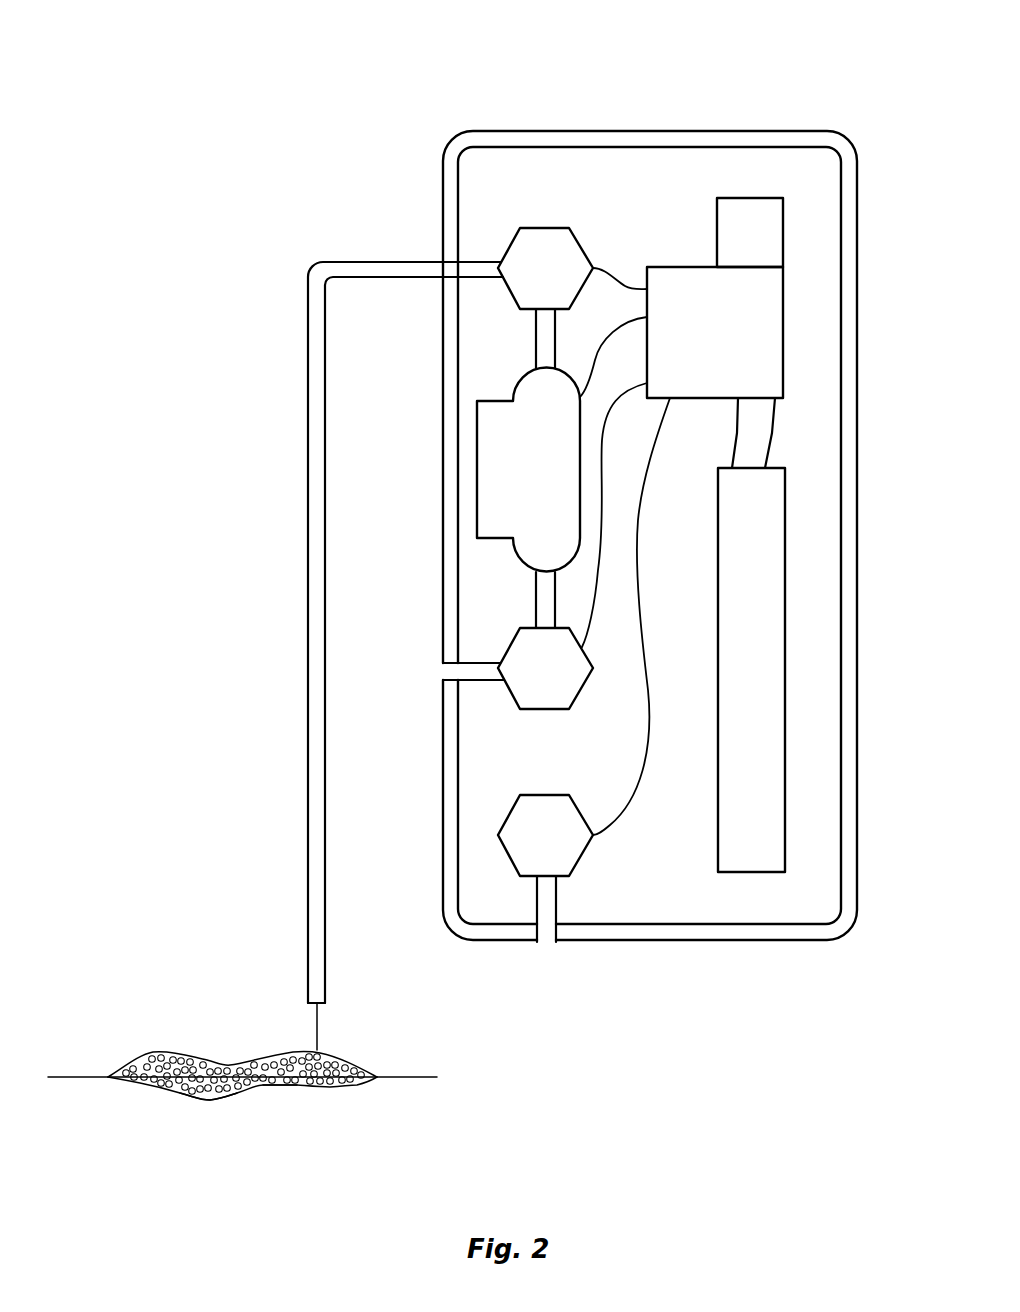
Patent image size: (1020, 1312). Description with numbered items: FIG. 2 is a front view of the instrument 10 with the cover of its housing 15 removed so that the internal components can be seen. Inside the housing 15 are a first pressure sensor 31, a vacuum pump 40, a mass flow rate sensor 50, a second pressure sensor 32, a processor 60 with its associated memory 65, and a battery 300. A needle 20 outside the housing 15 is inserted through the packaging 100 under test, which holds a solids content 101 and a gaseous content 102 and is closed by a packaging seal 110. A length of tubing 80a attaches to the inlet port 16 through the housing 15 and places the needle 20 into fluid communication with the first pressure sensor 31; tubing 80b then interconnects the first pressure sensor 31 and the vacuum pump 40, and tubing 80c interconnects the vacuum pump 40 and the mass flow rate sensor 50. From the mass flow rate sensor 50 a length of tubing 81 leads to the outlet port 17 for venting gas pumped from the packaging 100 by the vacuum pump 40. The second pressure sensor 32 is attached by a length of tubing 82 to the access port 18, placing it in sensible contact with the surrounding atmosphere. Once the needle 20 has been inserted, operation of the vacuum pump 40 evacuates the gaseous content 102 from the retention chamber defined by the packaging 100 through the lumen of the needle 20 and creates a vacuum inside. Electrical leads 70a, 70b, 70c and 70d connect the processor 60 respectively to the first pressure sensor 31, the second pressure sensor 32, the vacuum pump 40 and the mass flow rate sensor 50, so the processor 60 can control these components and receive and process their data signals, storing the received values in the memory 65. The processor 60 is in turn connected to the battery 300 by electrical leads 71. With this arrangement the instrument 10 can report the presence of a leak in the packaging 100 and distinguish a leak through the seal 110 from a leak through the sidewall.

The instrument 10 is at (382, 57).
The housing 15 is at (725, 158).
The inlet port through the housing 16 is at (450, 268).
The outlet port through the housing 17 is at (448, 672).
The access port through the housing 18 is at (546, 943).
The needle 20 is at (320, 1021).
The first pressure sensor 31 is at (561, 283).
The second pressure sensor 32 is at (561, 850).
The vacuum pump 40 is at (553, 482).
The mass flow rate sensor 50 is at (561, 683).
The processor 60 is at (730, 348).
The memory 65 is at (763, 247).
The lead from the first pressure sensor to the processor 70a is at (606, 268).
The lead from the second pressure sensor to the processor 70b is at (605, 357).
The lead from the vacuum pump to the processor 70c is at (593, 626).
The lead from the mass flow rate sensor to the processor 70d is at (638, 546).
The leads from the processor to the battery 71 is at (771, 430).
The length of tubing interconnecting the needle and the first pressure sensor 80a is at (308, 686).
The length of tubing interconnecting the first pressure sensor and the vacuum pump 80b is at (536, 330).
The length of tubing interconnecting the vacuum pump and the mass flow rate sensor 80c is at (536, 589).
The length of tubing from the mass flow rate sensor to the exit port through the hou 81 is at (490, 681).
The length of tubing from the second pressure sensor to the access port through the 82 is at (558, 909).
The packaging 100 is at (195, 1032).
The solids content of packaging 101 is at (218, 1101).
The gaseous content of packaging 102 is at (283, 1087).
The packaging seal 110 is at (72, 1077).
The battery 300 is at (772, 667).